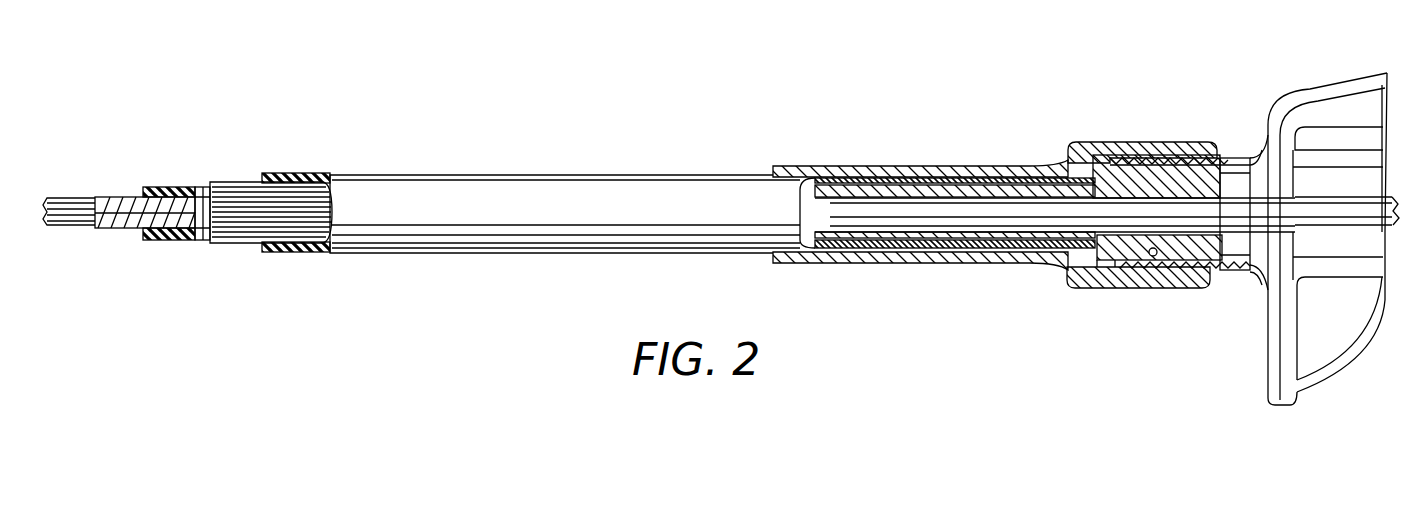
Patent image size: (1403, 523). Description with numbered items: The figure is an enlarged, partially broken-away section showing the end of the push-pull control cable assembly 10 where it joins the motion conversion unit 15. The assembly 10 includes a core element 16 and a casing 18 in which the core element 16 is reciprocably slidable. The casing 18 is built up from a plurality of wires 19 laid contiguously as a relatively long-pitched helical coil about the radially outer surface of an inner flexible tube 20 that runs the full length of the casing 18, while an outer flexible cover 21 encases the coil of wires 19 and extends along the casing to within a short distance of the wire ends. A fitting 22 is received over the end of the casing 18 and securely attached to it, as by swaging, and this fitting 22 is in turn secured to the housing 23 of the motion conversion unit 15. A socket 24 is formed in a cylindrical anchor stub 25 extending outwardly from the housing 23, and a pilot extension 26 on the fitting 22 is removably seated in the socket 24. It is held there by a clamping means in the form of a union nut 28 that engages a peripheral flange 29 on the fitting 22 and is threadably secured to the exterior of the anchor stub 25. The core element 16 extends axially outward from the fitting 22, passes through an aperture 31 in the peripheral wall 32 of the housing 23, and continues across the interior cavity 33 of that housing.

The push-pull control cable assembly 10 is at (503, 168).
The motion conversion unit 15 is at (1342, 74).
The core element 16 is at (116, 192).
The casing 18 is at (379, 190).
The wires 19 is at (242, 224).
The inner flexible tube 20 is at (173, 187).
The outer flexible cover 21 is at (307, 252).
The fitting 22 is at (933, 173).
The housing 23 is at (1275, 107).
The socket 24 is at (1152, 256).
The cylindrical anchor stub 25 is at (1165, 160).
The pilot extension 26 is at (1200, 180).
The union nut 28 is at (1092, 277).
The peripheral flange 29 is at (1102, 160).
The aperture 31 is at (1308, 202).
The peripheral wall 32 is at (1275, 373).
The interior cavity 33 is at (1304, 311).